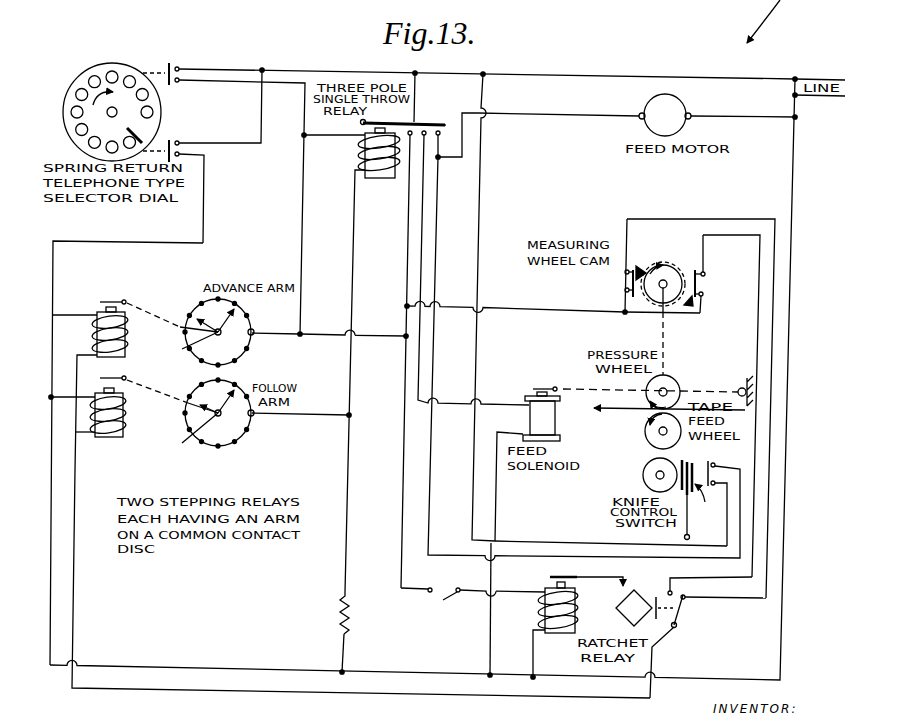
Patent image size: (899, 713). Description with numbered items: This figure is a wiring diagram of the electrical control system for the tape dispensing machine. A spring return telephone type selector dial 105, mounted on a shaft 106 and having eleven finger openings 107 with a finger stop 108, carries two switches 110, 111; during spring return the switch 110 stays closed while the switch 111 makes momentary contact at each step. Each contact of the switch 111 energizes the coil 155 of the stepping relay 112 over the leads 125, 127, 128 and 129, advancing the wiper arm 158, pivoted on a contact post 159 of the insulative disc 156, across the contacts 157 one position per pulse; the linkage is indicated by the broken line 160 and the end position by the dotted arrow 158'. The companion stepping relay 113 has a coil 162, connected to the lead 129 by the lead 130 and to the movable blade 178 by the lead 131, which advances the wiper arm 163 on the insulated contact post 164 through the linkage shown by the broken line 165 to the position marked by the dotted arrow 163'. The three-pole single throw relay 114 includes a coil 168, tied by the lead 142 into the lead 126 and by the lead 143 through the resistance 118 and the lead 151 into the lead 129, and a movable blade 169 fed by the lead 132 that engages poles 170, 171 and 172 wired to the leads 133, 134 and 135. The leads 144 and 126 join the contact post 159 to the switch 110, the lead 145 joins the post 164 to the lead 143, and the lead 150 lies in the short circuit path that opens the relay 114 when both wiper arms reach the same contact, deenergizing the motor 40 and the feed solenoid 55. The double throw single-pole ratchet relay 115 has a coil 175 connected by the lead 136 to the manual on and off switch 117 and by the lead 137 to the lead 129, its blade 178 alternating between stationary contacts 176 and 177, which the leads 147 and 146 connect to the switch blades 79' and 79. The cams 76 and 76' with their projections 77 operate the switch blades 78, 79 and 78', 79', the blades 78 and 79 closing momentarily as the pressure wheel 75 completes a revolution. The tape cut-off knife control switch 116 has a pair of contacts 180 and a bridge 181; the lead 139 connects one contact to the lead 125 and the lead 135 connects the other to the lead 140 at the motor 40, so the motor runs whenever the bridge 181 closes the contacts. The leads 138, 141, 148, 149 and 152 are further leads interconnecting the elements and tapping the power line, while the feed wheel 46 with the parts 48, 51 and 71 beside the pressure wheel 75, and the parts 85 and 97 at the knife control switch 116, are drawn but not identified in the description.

The spring return telephone type selector dial 105 is at (112, 63).
The shaft 106 is at (107, 114).
The finger openings 107 is at (72, 107).
The finger stop 108 is at (137, 130).
The switch 110 is at (176, 62).
The switch 111 is at (176, 136).
The stepping relay 112 is at (168, 296).
The stepping relay 113 is at (153, 427).
The three-pole single throw relay 114 is at (380, 184).
The double throw single-pole ratchet relay 115 is at (690, 629).
The tape cut-off knife control switch 116 is at (703, 537).
The manual on and off switch 117 is at (443, 600).
The resistance 118 is at (350, 607).
The lead 125 is at (320, 52).
The lead 126 is at (228, 84).
The lead 127 is at (243, 145).
The lead 128 is at (202, 224).
The lead 129 is at (52, 352).
The lead 130 is at (77, 395).
The lead 131 is at (75, 560).
The lead 132 is at (415, 90).
The lead 133 is at (404, 272).
The lead 134 is at (423, 253).
The lead 135 is at (440, 195).
The lead 136 is at (532, 592).
The lead 137 is at (532, 657).
The lead 138 is at (497, 502).
The lead 139 is at (482, 285).
The lead 140 is at (514, 115).
The lead 141 is at (765, 119).
The lead 142 is at (326, 137).
The lead 143 is at (350, 263).
The lead 144 is at (287, 337).
The lead 145 is at (313, 418).
The lead 146 is at (720, 219).
The lead 147 is at (703, 252).
The lead 148 is at (625, 304).
The lead 149 is at (543, 311).
The lead 150 is at (375, 340).
The lead 151 is at (342, 645).
The lead 152 is at (677, 313).
The coil 155 is at (128, 337).
The disc 156 is at (256, 321).
The contacts 157 is at (249, 312).
The wiper arm 158 is at (219, 336).
The dotted arrow 158' is at (194, 314).
The contact post 159 is at (184, 346).
The broken line 160 is at (155, 286).
The coil 162 is at (92, 412).
The wiper arm 163 is at (232, 415).
The dotted arrow 163' is at (177, 407).
The contact post 164 is at (190, 439).
The broken line 165 is at (167, 388).
The coil 168 is at (364, 148).
The movable conductive blade 169 is at (430, 120).
The pole 170 is at (375, 123).
The pole 171 is at (441, 123).
The pole 172 is at (441, 135).
The coil 175 is at (545, 607).
The stationary contact 176 is at (669, 592).
The stationary contact 177 is at (685, 595).
The movable contact blade 178 is at (677, 613).
The contacts 180 is at (714, 464).
The bridge 181 is at (708, 461).
The motor 40 is at (671, 108).
The feed wheel 46 is at (644, 431).
The feed wheel shaft 48 is at (644, 442).
The wheel shaft 51 is at (643, 470).
The feed solenoid 55 is at (548, 422).
The shaft 71 is at (661, 288).
The pressure wheel 75 is at (666, 375).
The circuit making and breaking cam 76 is at (666, 273).
The circuit making and breaking cam 76' is at (665, 265).
The projection 77 is at (643, 267).
The switch blade 78 is at (599, 292).
The switch blade 78' is at (718, 307).
The switch blade 79 is at (610, 282).
The switch blade 79' is at (722, 275).
The knife switch actuator 85 is at (707, 502).
The knife switch contact arm 97 is at (682, 529).